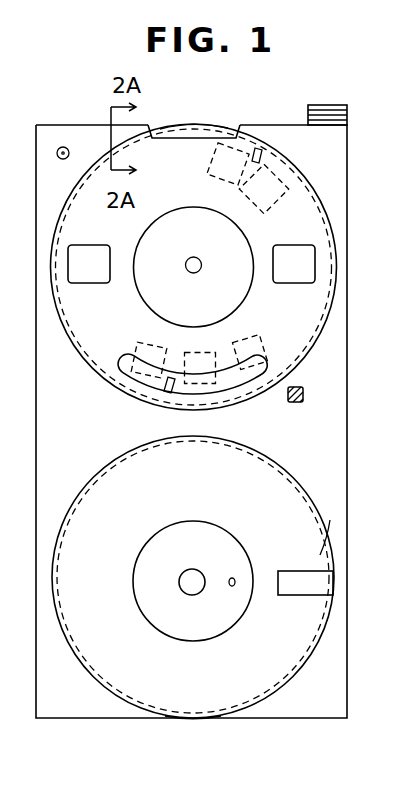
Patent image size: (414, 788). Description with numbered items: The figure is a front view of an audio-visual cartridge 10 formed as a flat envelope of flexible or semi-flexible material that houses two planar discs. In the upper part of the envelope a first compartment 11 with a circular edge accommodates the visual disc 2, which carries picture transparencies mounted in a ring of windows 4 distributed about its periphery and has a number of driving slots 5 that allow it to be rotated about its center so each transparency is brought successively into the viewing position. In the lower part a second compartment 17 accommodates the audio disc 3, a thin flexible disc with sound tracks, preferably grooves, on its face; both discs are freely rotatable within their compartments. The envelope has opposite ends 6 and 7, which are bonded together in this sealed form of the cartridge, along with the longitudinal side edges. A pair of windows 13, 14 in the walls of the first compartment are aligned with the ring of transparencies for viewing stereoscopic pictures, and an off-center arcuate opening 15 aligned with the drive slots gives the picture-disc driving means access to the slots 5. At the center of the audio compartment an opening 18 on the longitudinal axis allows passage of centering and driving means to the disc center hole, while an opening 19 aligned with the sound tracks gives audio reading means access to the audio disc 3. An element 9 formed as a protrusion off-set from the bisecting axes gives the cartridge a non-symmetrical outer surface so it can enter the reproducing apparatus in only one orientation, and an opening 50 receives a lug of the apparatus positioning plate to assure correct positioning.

The visual disc 2 is at (202, 131).
The audio disc 3 is at (72, 525).
The windows 4 is at (237, 196).
The driving slots 5 is at (278, 157).
The end of envelope 6 is at (185, 122).
The end of envelope 7 is at (190, 725).
The element formed as a protrusion 9 is at (305, 393).
The cartridge 10 is at (352, 142).
The compartment 11 is at (306, 212).
The window 13 is at (80, 265).
The window 14 is at (300, 269).
The off-center arcuate opening 15 is at (137, 378).
The compartment 17 is at (288, 547).
The opening 18 is at (217, 565).
The opening 19 is at (305, 585).
The opening 50 is at (63, 146).